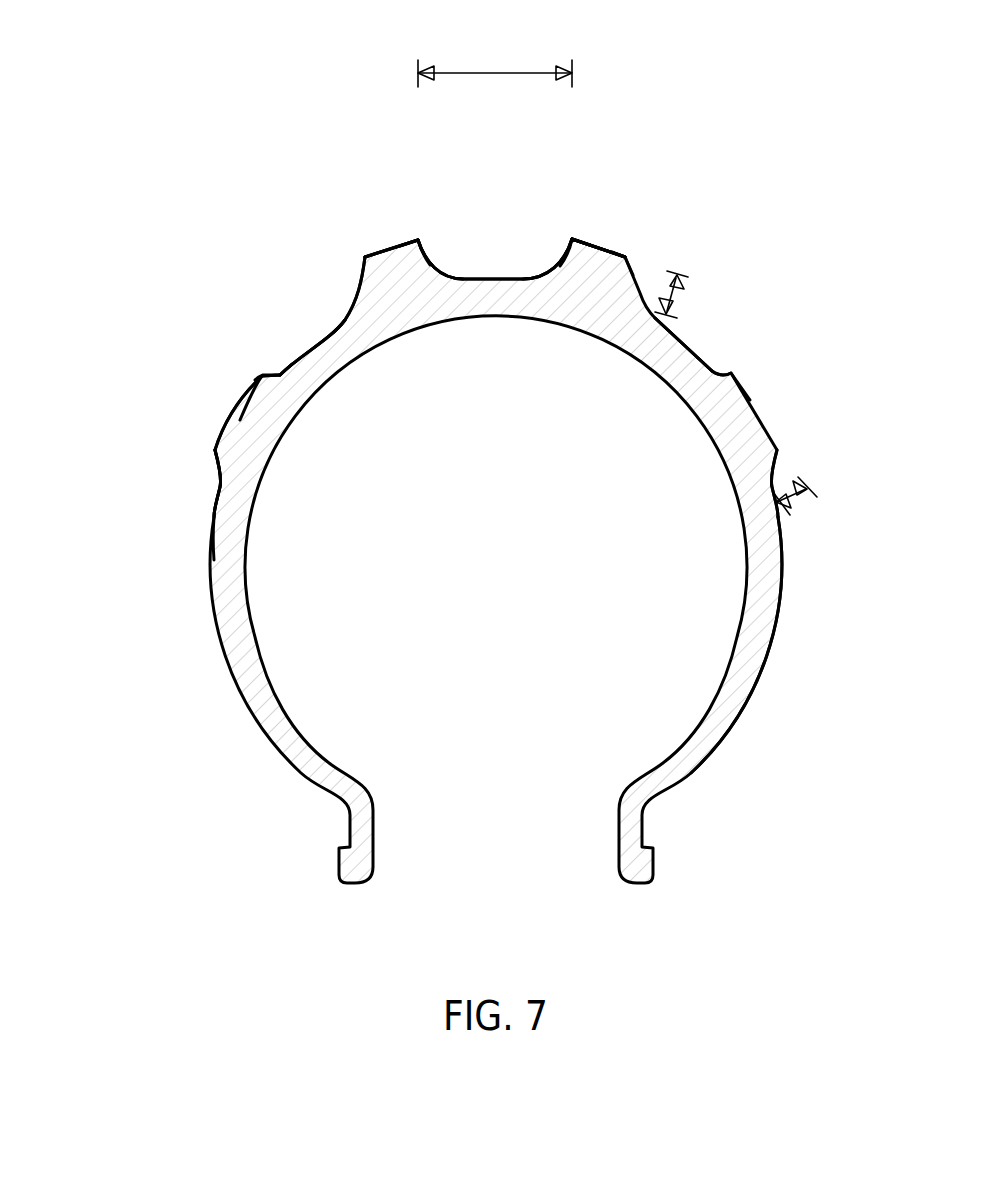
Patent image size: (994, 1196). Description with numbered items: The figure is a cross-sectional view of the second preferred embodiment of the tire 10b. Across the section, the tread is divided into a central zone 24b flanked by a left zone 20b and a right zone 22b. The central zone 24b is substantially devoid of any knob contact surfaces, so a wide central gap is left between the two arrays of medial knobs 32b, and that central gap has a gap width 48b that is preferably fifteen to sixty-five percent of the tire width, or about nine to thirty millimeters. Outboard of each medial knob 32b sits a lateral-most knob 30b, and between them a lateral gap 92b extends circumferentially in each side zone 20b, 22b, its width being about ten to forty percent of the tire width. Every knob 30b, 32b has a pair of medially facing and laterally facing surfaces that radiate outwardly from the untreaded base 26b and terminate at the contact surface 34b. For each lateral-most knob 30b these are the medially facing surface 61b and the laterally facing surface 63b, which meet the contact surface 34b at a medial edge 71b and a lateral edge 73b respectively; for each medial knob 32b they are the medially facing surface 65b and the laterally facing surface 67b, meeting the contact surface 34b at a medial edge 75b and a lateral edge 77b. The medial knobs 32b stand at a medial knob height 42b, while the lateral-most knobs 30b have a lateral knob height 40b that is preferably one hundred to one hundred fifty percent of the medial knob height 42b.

The tire 10b is at (106, 139).
The left zone 20b is at (314, 109).
The right zone 22b is at (911, 294).
The central zone 24b is at (572, 182).
The untreaded base 26b is at (683, 348).
The lateral-most knob 30b is at (758, 407).
The medial knob 32b is at (594, 247).
The contact surface 34b is at (598, 248).
The lateral knob height 40b is at (794, 494).
The medial knob height 42b is at (676, 297).
The gap width 48b is at (490, 73).
The medially facing surface 61b is at (267, 375).
The laterally facing surface 63b is at (212, 460).
The medially facing surface 65b is at (428, 257).
The laterally facing surface 67b is at (357, 277).
The medial edge 71b is at (259, 375).
The lateral edge 73b is at (777, 450).
The medial edge 75b is at (418, 240).
The lateral edge 77b is at (365, 257).
The lateral gap 92b is at (290, 225).